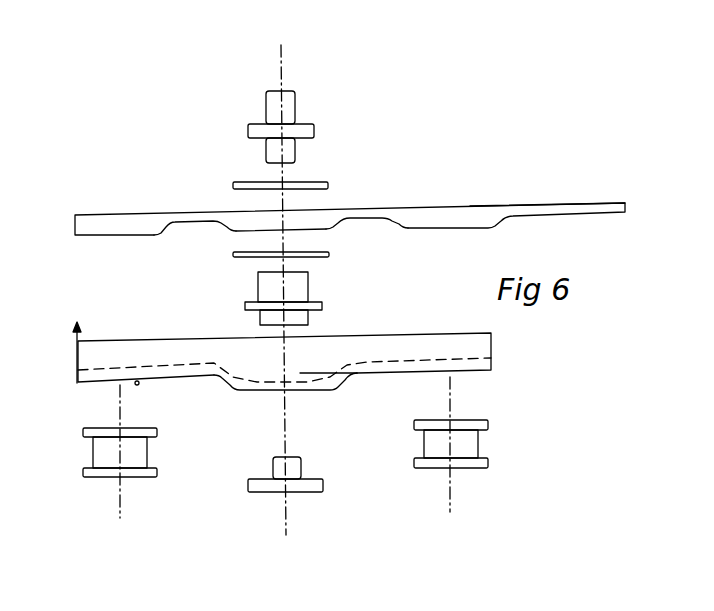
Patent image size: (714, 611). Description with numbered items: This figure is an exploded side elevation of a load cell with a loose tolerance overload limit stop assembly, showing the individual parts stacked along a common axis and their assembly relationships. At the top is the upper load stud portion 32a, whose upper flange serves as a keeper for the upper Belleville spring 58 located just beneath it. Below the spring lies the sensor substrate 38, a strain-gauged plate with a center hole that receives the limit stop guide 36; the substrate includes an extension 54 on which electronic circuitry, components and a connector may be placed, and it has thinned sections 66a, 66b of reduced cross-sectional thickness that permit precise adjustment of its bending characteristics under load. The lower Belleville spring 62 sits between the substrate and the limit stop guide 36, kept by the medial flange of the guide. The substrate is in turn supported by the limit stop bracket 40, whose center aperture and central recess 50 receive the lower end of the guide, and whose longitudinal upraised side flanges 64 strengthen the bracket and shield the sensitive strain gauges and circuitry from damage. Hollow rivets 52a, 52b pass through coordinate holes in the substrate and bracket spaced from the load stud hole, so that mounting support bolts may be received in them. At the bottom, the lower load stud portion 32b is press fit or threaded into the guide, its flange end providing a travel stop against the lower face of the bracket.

The upper load stud portion 32a is at (296, 102).
The lower load stud portion 32b is at (263, 493).
The limit stop guide 36 is at (308, 288).
The sensor substrate 38 is at (428, 205).
The limit stop bracket 40 is at (385, 373).
The central recess 50 is at (322, 383).
The hollow rivet 52a is at (97, 477).
The hollow rivet 52b is at (478, 468).
The extension 54 is at (568, 203).
The upper Belleville spring 58 is at (240, 180).
The lower Belleville spring 62 is at (247, 258).
The upraised side flanges 64 is at (491, 353).
The thinned section 66a is at (193, 227).
The thinned section 66b is at (360, 222).